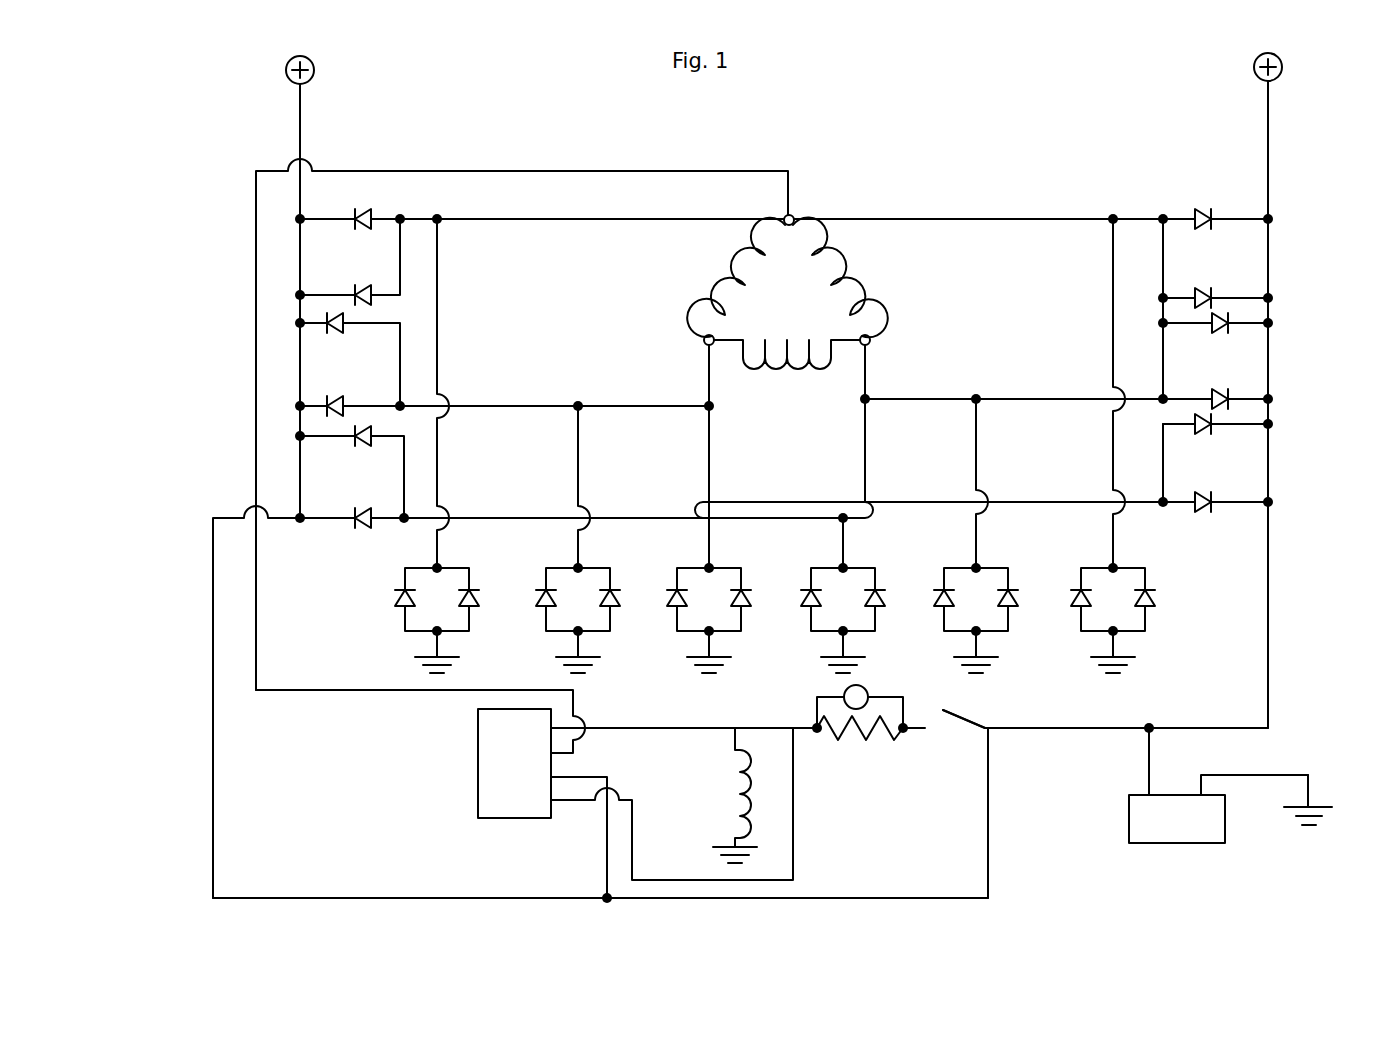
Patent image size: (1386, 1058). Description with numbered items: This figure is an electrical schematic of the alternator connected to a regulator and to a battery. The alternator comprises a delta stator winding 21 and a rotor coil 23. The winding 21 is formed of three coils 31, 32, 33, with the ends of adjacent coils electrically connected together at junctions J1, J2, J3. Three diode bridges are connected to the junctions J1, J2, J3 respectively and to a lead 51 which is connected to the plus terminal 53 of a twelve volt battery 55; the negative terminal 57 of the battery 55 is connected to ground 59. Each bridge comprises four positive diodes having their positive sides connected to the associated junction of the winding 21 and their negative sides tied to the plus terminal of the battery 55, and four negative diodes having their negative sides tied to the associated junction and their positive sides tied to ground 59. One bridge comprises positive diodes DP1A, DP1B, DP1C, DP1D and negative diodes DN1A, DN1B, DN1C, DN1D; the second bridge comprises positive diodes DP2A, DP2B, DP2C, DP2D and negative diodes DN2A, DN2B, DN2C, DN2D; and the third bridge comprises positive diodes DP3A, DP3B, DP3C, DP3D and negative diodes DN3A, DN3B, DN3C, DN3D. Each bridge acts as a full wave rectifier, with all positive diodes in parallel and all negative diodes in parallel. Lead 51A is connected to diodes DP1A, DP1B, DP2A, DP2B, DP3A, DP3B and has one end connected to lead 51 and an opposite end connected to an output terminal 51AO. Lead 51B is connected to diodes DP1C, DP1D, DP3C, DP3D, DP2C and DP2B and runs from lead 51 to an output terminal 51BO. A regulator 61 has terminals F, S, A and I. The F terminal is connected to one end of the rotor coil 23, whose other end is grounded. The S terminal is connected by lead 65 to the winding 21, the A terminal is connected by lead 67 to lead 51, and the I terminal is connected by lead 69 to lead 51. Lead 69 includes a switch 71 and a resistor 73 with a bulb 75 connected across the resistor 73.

The output terminal 51BO is at (316, 58).
The output terminal 51AO is at (1254, 57).
The positive diode DP1C is at (356, 196).
The positive diode DP1D is at (340, 283).
The positive diode DP3C is at (322, 316).
The positive diode DP3D is at (322, 408).
The positive diode DP2C is at (342, 440).
The positive diode DP2D is at (342, 525).
The positive diode DP1A is at (1225, 215).
The positive diode DP1B is at (1225, 293).
The positive diode DP2A is at (1236, 331).
The positive diode DP2B is at (1236, 394).
The positive diode DP3A is at (1225, 430).
The positive diode DP3B is at (1225, 494).
The delta stator winding 21 is at (757, 284).
The coil 31 is at (858, 262).
The coil 32 is at (796, 376).
The coil 33 is at (730, 262).
The junction J1 is at (792, 213).
The junction J2 is at (872, 346).
The junction J3 is at (703, 346).
The negative diode DN1C is at (402, 598).
The negative diode DN1D is at (465, 610).
The negative diode DN3C is at (545, 580).
The negative diode DN3D is at (612, 578).
The negative diode DN3A is at (672, 612).
The negative diode DN3B is at (745, 612).
The negative diode DN2C is at (790, 590).
The negative diode DN2D is at (882, 598).
The negative diode DN2A is at (945, 612).
The negative diode DN2B is at (1010, 582).
The negative diode DN1A is at (1080, 612).
The negative diode DN1B is at (1147, 612).
The lead 51B is at (211, 640).
The lead 51A is at (1270, 615).
The lead 65 is at (385, 692).
The lead 67 is at (935, 895).
The lead 69 is at (983, 742).
The regulator 61 is at (476, 800).
The rotor coil 23 is at (733, 808).
The resistor 73 is at (863, 734).
The bulb 75 is at (838, 690).
The switch 71 is at (958, 726).
The lead 51 is at (1140, 762).
The plus terminal 53 is at (1157, 792).
The battery 55 is at (1215, 830).
The negative terminal 57 is at (1212, 790).
The ground 59 is at (1298, 826).